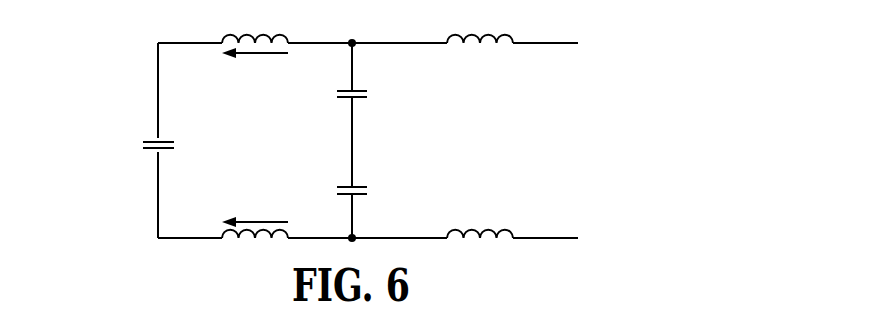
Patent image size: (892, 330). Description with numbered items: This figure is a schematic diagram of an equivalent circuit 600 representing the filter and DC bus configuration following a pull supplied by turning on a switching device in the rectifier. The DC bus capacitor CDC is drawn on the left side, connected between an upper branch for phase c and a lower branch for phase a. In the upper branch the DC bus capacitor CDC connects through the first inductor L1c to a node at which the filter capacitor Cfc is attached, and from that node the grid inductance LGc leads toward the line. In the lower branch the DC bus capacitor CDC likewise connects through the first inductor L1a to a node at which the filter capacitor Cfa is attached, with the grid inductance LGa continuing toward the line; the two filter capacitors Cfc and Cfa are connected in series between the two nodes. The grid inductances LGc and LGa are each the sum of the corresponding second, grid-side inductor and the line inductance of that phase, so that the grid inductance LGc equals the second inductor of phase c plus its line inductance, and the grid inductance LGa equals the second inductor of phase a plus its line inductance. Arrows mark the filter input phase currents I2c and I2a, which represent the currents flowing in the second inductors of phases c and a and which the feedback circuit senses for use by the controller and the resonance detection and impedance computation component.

The equivalent circuit 600 is at (127, 51).
The first inductor L1c is at (255, 26).
The first inductor L1a is at (255, 248).
The grid inductance LGc is at (480, 25).
The grid inductance LGa is at (478, 220).
The DC bus capacitor CDC is at (138, 140).
The filter capacitor Cfc is at (336, 92).
The filter capacitor Cfa is at (336, 190).
The filter input phase current I2c is at (255, 63).
The filter input phase current I2a is at (255, 211).